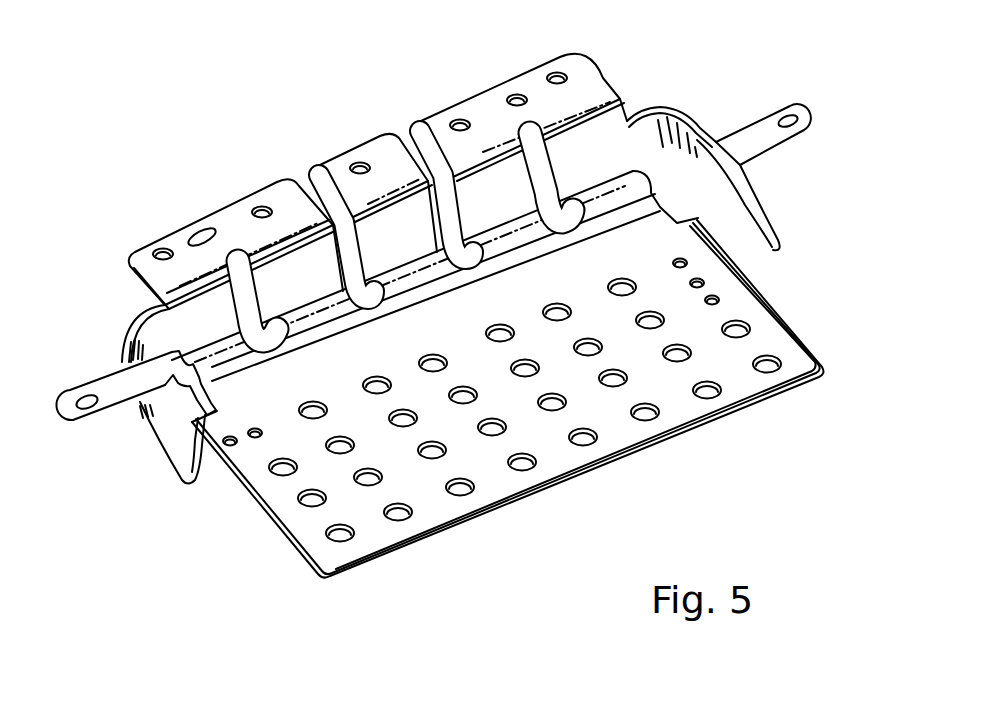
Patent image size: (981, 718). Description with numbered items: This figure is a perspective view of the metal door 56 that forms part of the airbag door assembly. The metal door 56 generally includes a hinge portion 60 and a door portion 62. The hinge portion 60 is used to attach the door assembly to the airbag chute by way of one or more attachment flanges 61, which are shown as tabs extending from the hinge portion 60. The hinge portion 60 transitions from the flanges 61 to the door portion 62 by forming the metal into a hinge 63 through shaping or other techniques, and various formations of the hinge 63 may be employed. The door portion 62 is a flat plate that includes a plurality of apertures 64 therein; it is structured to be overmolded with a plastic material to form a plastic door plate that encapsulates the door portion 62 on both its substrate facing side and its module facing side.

The metal door 56 is at (120, 357).
The hinge portion 60 is at (624, 117).
The attachment flanges 61 is at (483, 108).
The door portion 62 is at (541, 399).
The hinge 63 is at (328, 163).
The apertures 64 is at (545, 415).